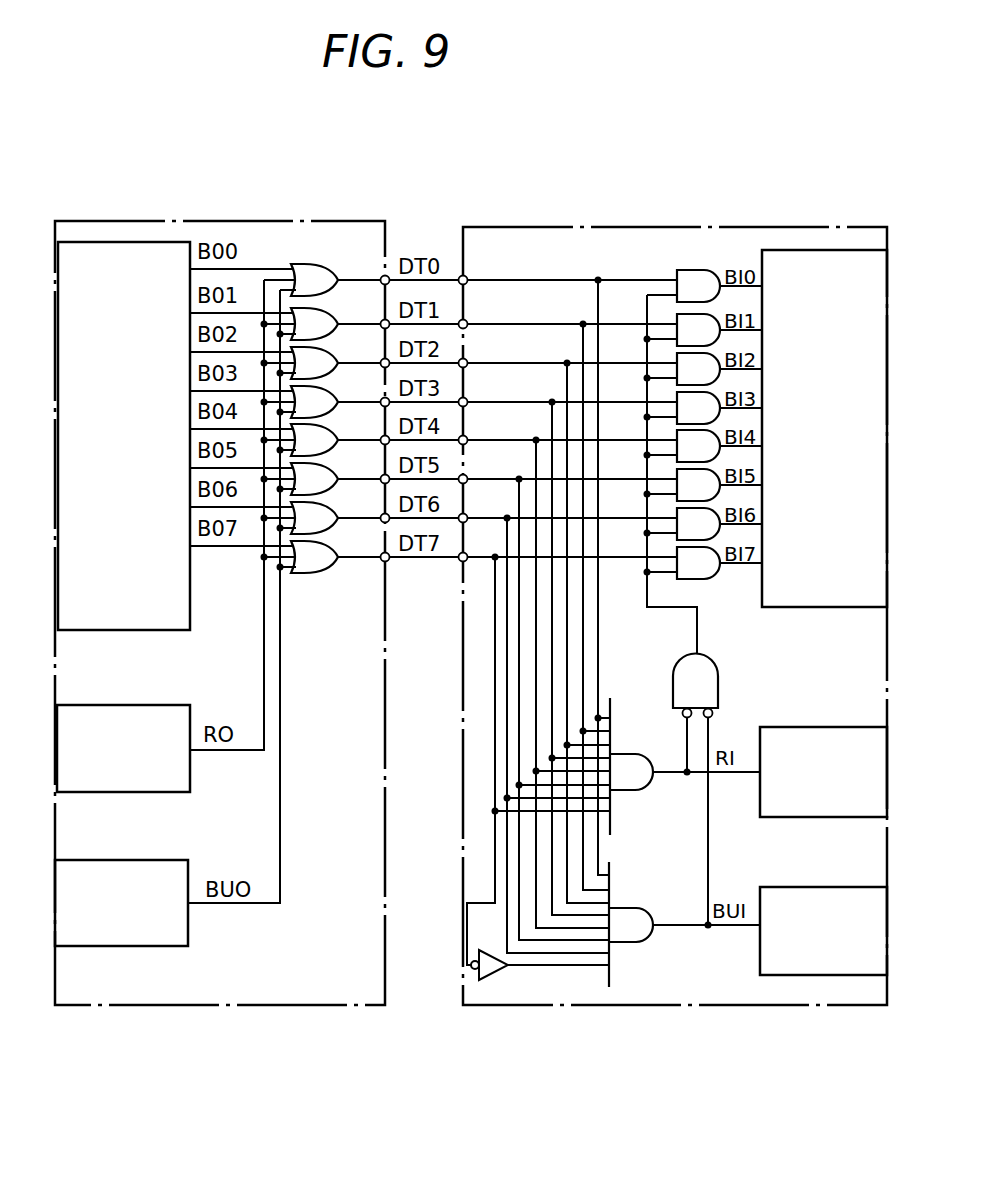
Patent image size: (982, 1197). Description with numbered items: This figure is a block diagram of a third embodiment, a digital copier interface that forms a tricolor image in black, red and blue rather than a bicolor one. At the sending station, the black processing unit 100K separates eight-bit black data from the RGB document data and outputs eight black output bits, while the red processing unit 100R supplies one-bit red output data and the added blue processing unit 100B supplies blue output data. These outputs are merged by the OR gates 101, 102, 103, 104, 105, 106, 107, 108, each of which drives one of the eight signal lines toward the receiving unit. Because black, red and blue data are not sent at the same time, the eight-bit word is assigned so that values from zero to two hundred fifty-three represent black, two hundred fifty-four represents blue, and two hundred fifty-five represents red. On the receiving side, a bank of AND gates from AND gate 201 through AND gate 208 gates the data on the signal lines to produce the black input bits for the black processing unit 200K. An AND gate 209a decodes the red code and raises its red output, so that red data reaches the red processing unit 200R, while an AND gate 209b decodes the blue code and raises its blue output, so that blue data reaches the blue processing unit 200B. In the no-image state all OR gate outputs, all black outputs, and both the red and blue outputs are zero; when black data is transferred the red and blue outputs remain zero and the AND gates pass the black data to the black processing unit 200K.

The OR gate 101 is at (351, 271).
The OR gate 102 is at (257, 1007).
The OR gate 103 is at (612, 1008).
The OR gate 104 is at (331, 392).
The OR gate 105 is at (331, 430).
The OR gate 106 is at (331, 469).
The OR gate 107 is at (331, 508).
The OR gate 108 is at (331, 547).
The AND gate 201 is at (698, 271).
The AND gate 208 is at (715, 581).
The AND gate 209a is at (638, 752).
The AND gate 209b is at (655, 945).
The black processing unit 100K is at (192, 607).
The red processing unit 100R is at (139, 704).
The blue processing unit 100B is at (146, 858).
The black processing unit 200K is at (786, 609).
The red processing unit 200R is at (799, 725).
The blue processing unit 200B is at (805, 885).